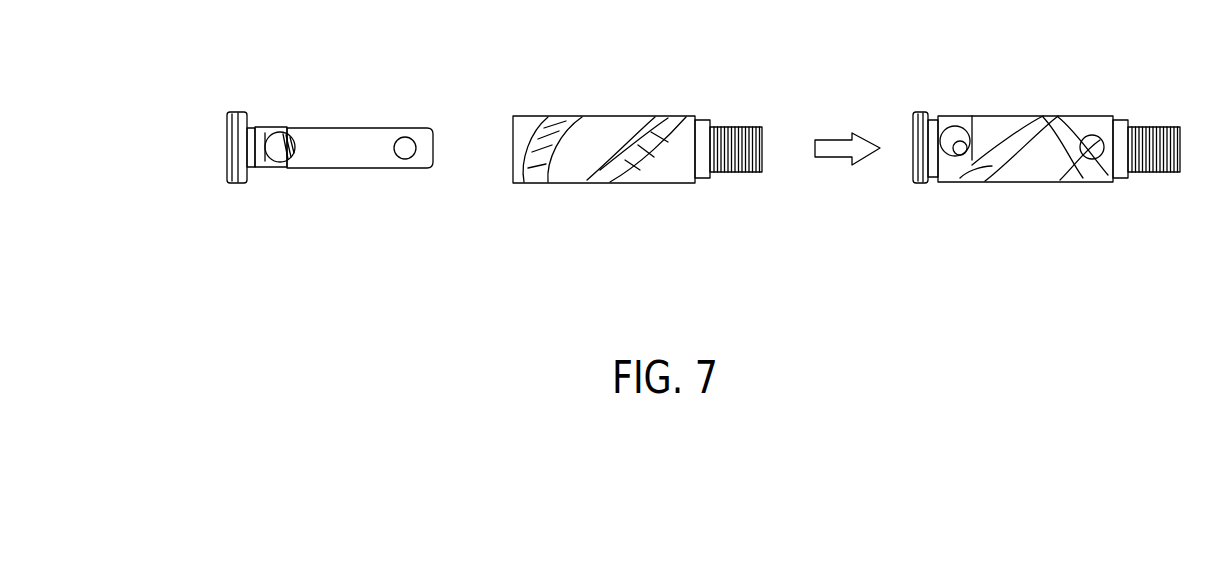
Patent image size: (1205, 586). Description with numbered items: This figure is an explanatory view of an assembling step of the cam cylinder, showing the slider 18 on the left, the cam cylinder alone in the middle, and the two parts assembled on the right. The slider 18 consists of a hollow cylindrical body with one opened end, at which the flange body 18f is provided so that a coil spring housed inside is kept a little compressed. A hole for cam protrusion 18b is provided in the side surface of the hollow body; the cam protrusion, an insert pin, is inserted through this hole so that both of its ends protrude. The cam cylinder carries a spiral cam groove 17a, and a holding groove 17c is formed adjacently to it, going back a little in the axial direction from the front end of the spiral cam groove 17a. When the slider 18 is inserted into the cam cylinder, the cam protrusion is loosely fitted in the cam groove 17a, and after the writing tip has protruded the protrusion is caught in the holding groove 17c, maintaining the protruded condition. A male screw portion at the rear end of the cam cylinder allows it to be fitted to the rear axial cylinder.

The spiral cam groove 17a is at (998, 153).
The holding groove 17c is at (972, 168).
The slider 18 is at (352, 198).
The hole for cam protrusion 18b is at (405, 136).
The flange body 18f is at (226, 151).